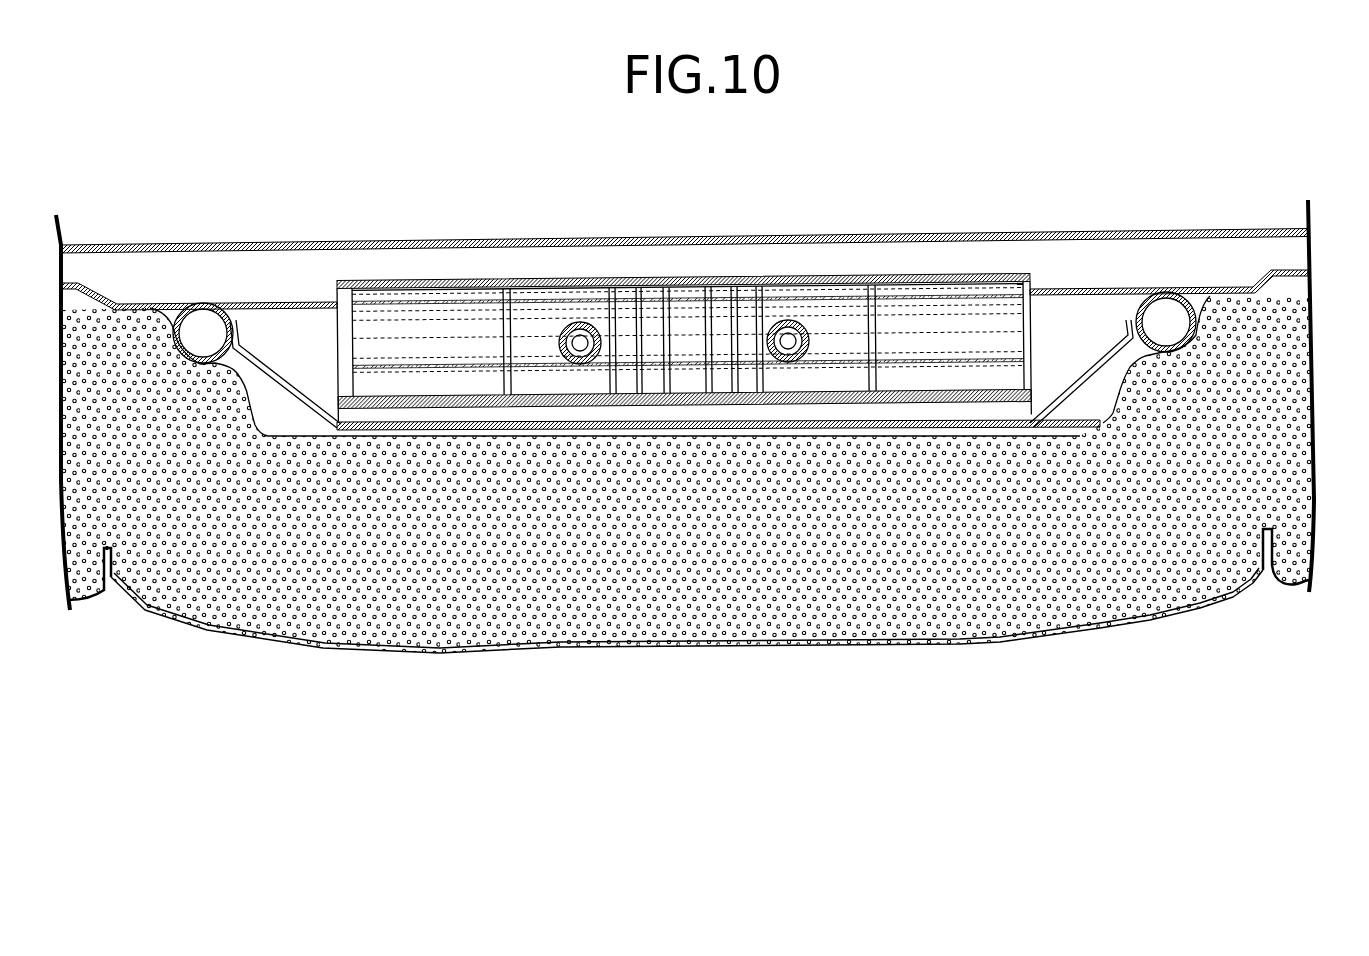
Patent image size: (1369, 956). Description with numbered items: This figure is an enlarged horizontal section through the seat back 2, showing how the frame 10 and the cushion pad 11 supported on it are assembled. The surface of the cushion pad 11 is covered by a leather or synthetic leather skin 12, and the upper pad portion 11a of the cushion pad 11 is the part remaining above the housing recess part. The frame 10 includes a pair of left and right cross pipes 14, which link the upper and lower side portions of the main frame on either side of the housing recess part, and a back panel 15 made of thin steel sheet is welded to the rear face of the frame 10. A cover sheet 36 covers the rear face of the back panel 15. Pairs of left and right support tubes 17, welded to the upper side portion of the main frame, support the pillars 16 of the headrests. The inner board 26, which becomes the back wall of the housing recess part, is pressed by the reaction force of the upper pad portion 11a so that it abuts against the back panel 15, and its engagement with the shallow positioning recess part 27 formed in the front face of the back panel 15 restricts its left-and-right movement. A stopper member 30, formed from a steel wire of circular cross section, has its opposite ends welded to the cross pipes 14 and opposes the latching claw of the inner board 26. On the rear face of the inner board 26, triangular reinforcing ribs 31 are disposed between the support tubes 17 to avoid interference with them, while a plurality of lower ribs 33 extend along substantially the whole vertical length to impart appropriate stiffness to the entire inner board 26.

The seat back 2 is at (1318, 408).
The frame 10 is at (214, 304).
The cushion pad 11 is at (1243, 477).
The upper pad portion 11a is at (690, 600).
The skin 12 is at (1122, 632).
The cross pipes 14 is at (180, 312).
The back panel 15 is at (1060, 289).
The pillars 16 is at (584, 334).
The support tubes 17 is at (572, 326).
The inner board 26 is at (827, 421).
The positioning recess part 27 is at (351, 316).
The stopper member 30 is at (450, 425).
The reinforcing ribs 31 is at (759, 392).
The ribs 33 is at (747, 280).
The cover sheet 36 is at (912, 236).